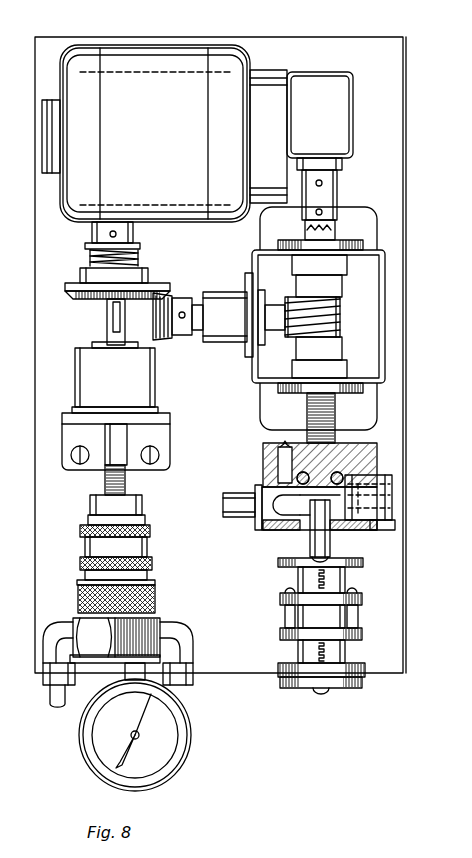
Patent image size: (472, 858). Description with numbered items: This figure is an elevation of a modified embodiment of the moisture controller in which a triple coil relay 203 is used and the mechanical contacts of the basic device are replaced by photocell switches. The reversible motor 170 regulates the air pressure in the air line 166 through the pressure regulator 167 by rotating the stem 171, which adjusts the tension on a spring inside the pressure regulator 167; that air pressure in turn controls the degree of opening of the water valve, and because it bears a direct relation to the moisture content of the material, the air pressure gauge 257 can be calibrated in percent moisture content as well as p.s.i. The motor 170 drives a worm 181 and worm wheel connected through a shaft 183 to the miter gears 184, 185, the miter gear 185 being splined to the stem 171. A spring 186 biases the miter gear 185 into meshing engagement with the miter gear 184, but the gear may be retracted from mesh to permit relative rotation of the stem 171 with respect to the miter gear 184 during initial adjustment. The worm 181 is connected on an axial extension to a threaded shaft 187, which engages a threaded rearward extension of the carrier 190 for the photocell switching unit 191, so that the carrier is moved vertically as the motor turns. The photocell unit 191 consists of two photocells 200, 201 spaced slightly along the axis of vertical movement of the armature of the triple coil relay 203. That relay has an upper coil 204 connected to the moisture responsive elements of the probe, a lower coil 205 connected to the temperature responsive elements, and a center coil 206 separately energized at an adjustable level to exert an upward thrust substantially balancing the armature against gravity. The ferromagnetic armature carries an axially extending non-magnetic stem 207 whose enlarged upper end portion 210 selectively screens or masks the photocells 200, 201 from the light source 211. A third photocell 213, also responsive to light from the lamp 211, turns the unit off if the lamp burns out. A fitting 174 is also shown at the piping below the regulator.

The reversible motor 170 is at (141, 71).
The spring 186 is at (88, 256).
The miter gear 185 is at (145, 290).
The miter gear 184 is at (170, 295).
The shaft 183 is at (195, 337).
The worm 181 is at (330, 329).
The threaded shaft 187 is at (332, 410).
The third photocell 213 is at (282, 455).
The carrier 190 is at (367, 460).
The photocell switching unit 191 is at (392, 482).
The photocell 200 is at (392, 495).
The photocell 201 is at (370, 508).
The upper end portion 210 is at (363, 530).
The light source 211 is at (285, 508).
The stem 207 is at (332, 548).
The upper coil 204 is at (345, 580).
The center coil 206 is at (340, 618).
The lower coil 205 is at (350, 655).
The triple coil relay 203 is at (313, 626).
The stem 171 is at (127, 483).
The pressure regulator 167 is at (132, 602).
The nipple 174 is at (53, 702).
The air line 166 is at (187, 698).
The air pressure gauge 257 is at (180, 752).